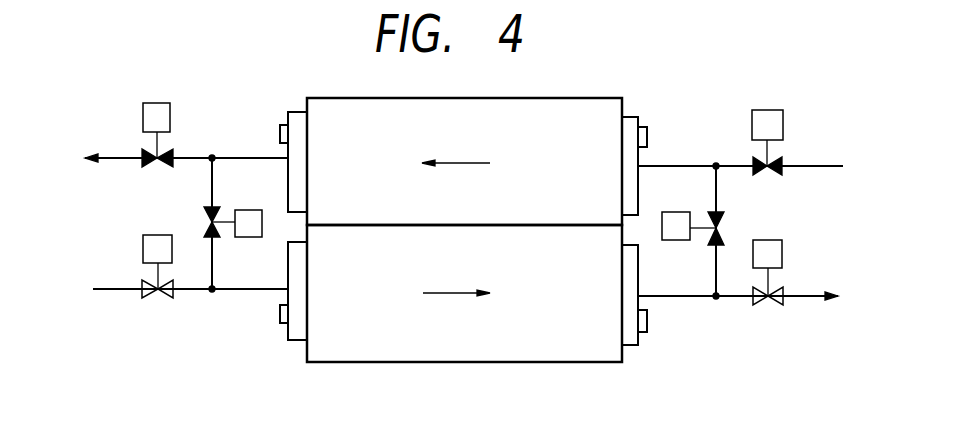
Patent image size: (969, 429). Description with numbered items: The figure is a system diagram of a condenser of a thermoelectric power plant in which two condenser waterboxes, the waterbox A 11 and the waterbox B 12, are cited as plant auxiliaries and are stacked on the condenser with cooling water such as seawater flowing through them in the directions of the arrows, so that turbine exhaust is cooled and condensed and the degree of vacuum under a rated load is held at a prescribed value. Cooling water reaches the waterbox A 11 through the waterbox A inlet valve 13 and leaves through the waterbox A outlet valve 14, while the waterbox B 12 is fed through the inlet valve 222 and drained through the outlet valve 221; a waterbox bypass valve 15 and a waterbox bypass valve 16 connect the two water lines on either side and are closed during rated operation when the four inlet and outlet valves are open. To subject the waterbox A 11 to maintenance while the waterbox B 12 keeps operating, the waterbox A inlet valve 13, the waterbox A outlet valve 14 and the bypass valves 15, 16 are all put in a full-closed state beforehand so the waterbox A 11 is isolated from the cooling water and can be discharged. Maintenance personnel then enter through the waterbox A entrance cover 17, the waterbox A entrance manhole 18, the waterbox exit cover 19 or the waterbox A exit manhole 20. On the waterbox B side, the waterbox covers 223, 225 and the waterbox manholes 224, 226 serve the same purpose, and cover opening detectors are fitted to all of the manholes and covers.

The waterbox A 11 is at (558, 98).
The waterbox B 12 is at (562, 365).
The waterbox A inlet valve 13 is at (778, 160).
The waterbox A outlet valve 14 is at (142, 155).
The waterbox bypass valve 15 is at (720, 235).
The waterbox bypass valve 16 is at (205, 215).
The waterbox A entrance cover 17 is at (628, 115).
The waterbox A entrance manhole 18 is at (647, 135).
The waterbox exit cover 19 is at (297, 110).
The waterbox A exit manhole 20 is at (278, 133).
The outlet valve 221 is at (783, 255).
The inlet valve 222 is at (143, 250).
The waterbox cover 223 is at (632, 350).
The waterbox manhole 224 is at (647, 318).
The waterbox cover 225 is at (295, 342).
The waterbox manhole 226 is at (278, 315).